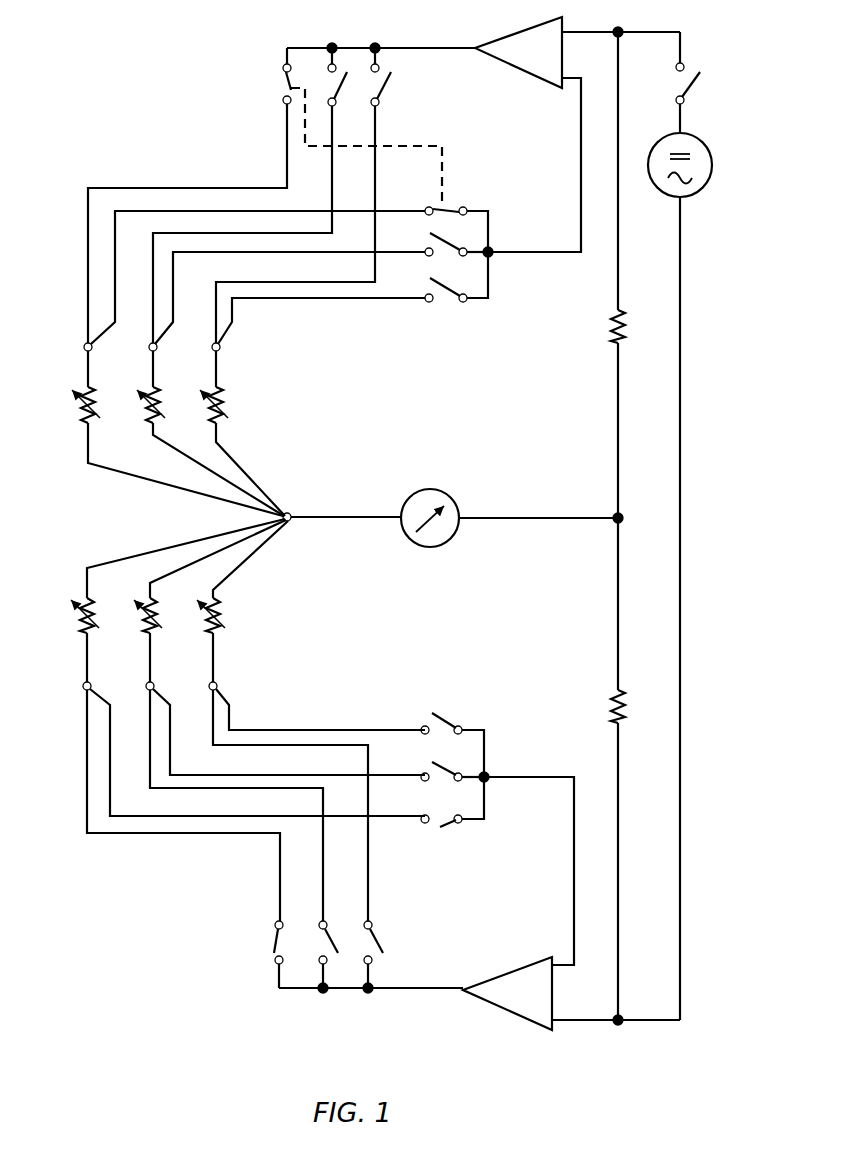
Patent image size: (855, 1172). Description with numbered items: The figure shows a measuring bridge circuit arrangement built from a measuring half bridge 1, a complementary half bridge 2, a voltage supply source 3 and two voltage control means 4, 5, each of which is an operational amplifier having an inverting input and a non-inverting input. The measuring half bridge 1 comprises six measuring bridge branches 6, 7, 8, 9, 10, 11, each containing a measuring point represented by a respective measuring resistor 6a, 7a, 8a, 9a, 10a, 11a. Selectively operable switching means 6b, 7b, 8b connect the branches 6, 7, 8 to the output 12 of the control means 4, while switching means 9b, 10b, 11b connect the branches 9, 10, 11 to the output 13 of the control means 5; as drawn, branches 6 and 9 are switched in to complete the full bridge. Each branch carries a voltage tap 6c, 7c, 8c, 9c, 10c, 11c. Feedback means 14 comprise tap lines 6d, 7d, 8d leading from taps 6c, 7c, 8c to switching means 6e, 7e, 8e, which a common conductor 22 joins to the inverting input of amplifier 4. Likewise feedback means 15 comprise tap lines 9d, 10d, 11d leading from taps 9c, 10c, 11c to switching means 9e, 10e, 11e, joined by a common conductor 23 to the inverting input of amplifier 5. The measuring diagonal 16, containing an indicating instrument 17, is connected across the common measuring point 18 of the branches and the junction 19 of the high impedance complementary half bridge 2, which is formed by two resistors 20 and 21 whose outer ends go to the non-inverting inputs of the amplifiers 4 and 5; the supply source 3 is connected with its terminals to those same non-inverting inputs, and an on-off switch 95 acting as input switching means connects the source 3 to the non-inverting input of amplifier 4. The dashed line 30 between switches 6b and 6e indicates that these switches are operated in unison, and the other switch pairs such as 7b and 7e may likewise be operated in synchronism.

The measuring half bridge 1 is at (116, 158).
The complementary half bridge 2 is at (599, 526).
The voltage supply source 3 is at (697, 142).
The voltage control means 4 is at (533, 36).
The voltage control means 5 is at (493, 1003).
The measuring bridge branch 6 is at (158, 385).
The measuring resistor 6a is at (80, 405).
The switching means 6b is at (283, 80).
The voltage tap 6c is at (82, 346).
The tap line 6d is at (302, 211).
The switching means 6e is at (453, 209).
The measuring bridge branch 7 is at (198, 385).
The measuring resistor 7a is at (147, 408).
The switching means 7b is at (345, 84).
The voltage tap 7c is at (158, 347).
The tap line 7d is at (361, 249).
The switching means 7e is at (443, 241).
The measuring bridge branch 8 is at (242, 385).
The measuring resistor 8a is at (226, 405).
The switching means 8b is at (387, 84).
The voltage tap 8c is at (222, 347).
The tap line 8d is at (326, 299).
The switching means 8e is at (443, 287).
The measuring bridge branch 9 is at (233, 720).
The measuring resistor 9a is at (80, 612).
The switching means 9b is at (275, 950).
The voltage tap 9c is at (80, 684).
The tap line 9d is at (385, 818).
The switching means 9e is at (440, 825).
The measuring bridge branch 10 is at (261, 720).
The measuring resistor 10a is at (142, 612).
The switching means 10b is at (322, 935).
The voltage tap 10c is at (156, 684).
The tap line 10d is at (343, 780).
The switching means 10e is at (445, 767).
The measuring bridge branch 11 is at (311, 721).
The measuring resistor 11a is at (222, 612).
The switching means 11b is at (375, 940).
The voltage tap 11c is at (219, 684).
The tap line 11d is at (265, 728).
The switching means 11e is at (455, 725).
The output 12 is at (458, 48).
The output 13 is at (432, 988).
The feedback means 14 is at (296, 259).
The feedback means 15 is at (446, 754).
The measuring diagonal 16 is at (333, 517).
The indicating instrument 17 is at (425, 492).
The common measuring point 18 is at (287, 511).
The junction 19 is at (613, 515).
The resistor 20 is at (612, 325).
The resistor 21 is at (612, 700).
The common conductor 22 is at (580, 135).
The common conductor 23 is at (574, 835).
The dashed line 30 is at (442, 146).
The on-off switch 95 is at (702, 90).